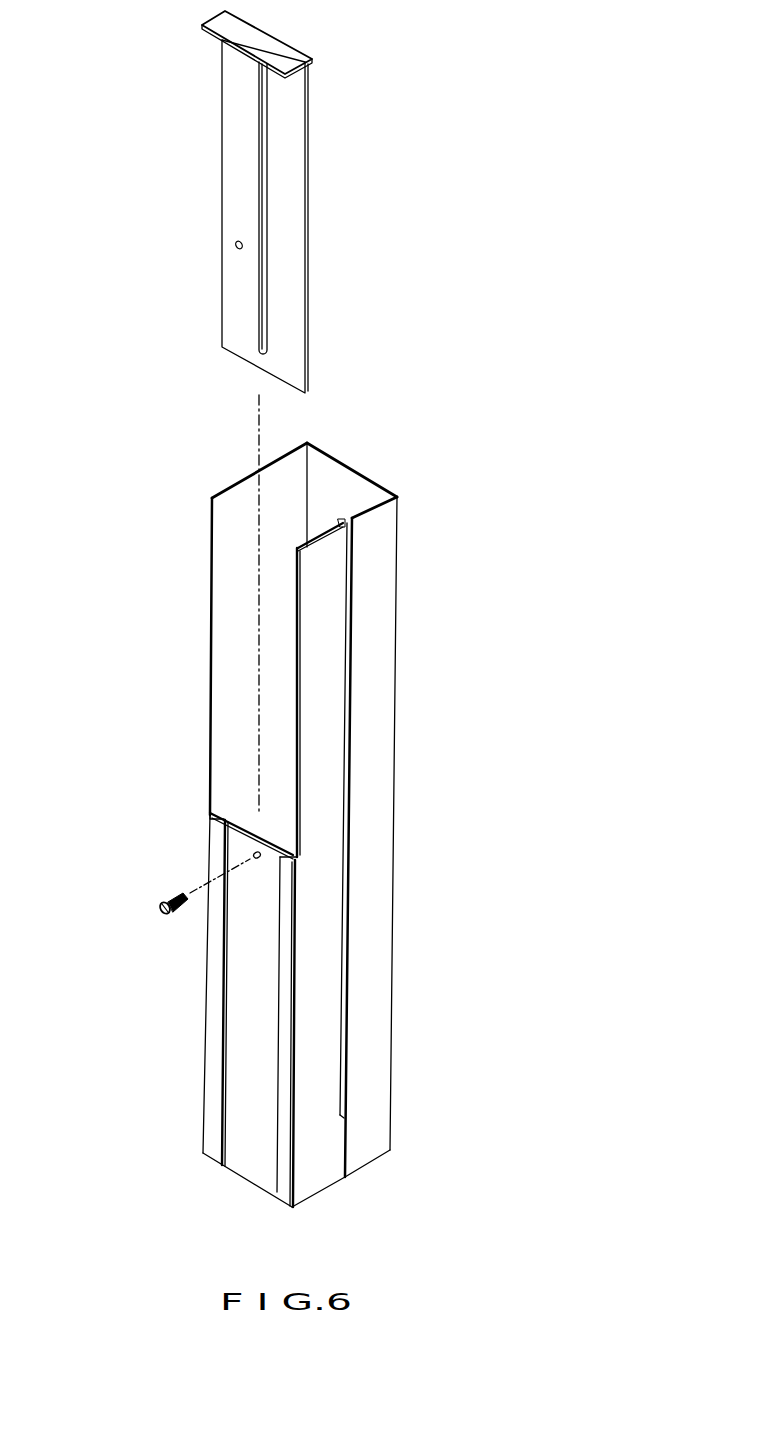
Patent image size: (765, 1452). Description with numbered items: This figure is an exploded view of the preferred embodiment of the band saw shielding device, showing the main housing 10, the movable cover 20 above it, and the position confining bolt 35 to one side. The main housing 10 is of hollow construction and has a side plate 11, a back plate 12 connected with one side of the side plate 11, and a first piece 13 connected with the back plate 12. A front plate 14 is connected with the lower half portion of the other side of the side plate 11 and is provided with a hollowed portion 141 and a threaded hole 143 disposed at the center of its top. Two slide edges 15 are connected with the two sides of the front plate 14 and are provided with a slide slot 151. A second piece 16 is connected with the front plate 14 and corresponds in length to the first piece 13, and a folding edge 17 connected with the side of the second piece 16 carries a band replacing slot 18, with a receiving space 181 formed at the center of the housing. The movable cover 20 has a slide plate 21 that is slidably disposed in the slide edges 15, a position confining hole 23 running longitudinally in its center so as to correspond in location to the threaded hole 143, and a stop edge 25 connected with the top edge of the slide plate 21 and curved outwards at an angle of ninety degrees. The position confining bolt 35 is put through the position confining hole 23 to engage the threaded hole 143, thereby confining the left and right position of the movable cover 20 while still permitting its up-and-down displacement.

The main housing 10 is at (311, 821).
The side plate 11 is at (238, 480).
The back plate 12 is at (348, 465).
The first piece 13 is at (390, 553).
The front plate 14 is at (240, 1133).
The hollowed portion 141 is at (223, 617).
The threaded hole 143 is at (254, 853).
The slide edges 15 is at (210, 1087).
The slide slot 151 is at (218, 817).
The second piece 16 is at (318, 1155).
The folding edge 17 is at (343, 523).
The band replacing slot 18 is at (352, 630).
The receiving space 181 is at (285, 512).
The movable cover 20 is at (302, 202).
The slide plate 21 is at (297, 323).
The position confining hole 23 is at (265, 133).
The stop edge 25 is at (283, 50).
The position confining bolt 35 is at (150, 905).